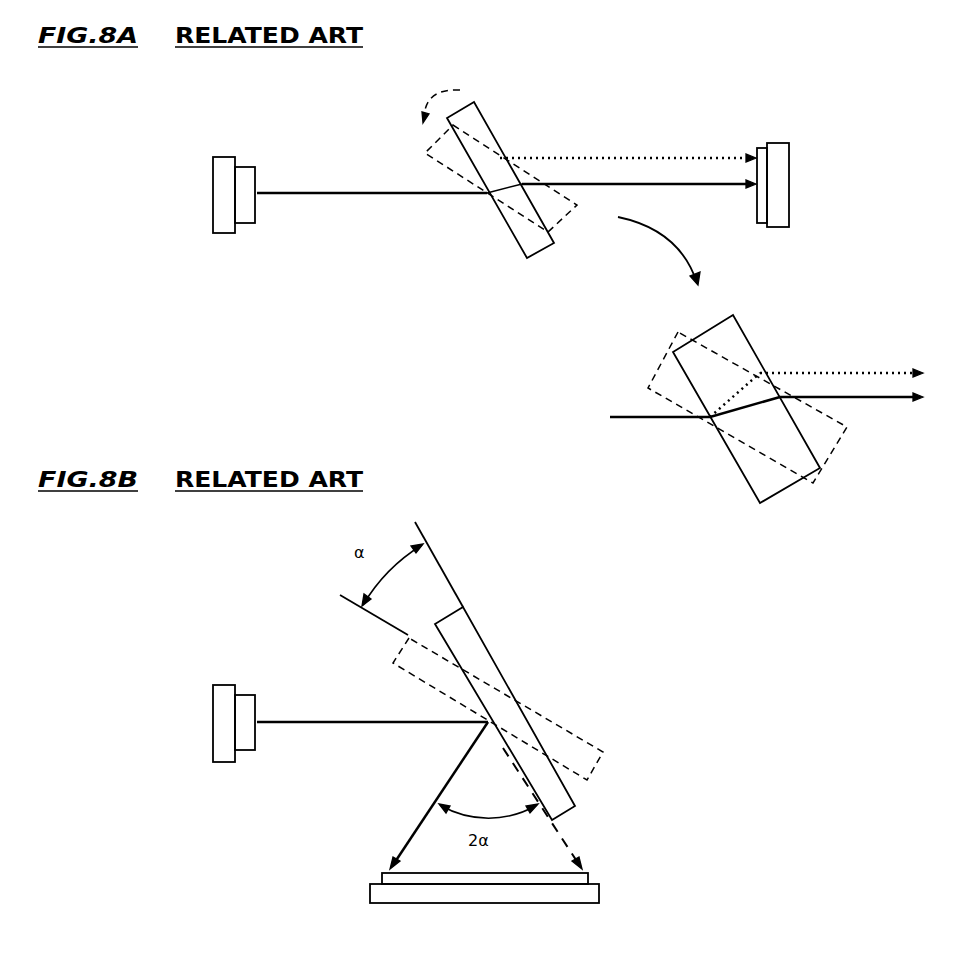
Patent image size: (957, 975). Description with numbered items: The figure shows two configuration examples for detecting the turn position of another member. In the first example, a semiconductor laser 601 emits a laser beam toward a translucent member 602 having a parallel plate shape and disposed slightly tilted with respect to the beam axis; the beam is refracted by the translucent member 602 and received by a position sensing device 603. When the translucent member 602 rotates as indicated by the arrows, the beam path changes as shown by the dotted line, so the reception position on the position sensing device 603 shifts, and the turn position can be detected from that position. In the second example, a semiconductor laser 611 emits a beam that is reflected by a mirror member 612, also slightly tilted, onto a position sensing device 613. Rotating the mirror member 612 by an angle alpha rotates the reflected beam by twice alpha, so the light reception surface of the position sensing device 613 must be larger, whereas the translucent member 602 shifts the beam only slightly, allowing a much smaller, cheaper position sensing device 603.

In FIG. 8A, the semiconductor laser 601 is at (220, 152).
In FIG. 8A, the translucent member 602 is at (492, 118).
In FIG. 8A, the position sensing device 603 is at (778, 135).
In FIG. 8B, the semiconductor laser 611 is at (221, 684).
In FIG. 8B, the mirror member 612 is at (470, 640).
In FIG. 8B, the position sensing device 613 is at (598, 880).